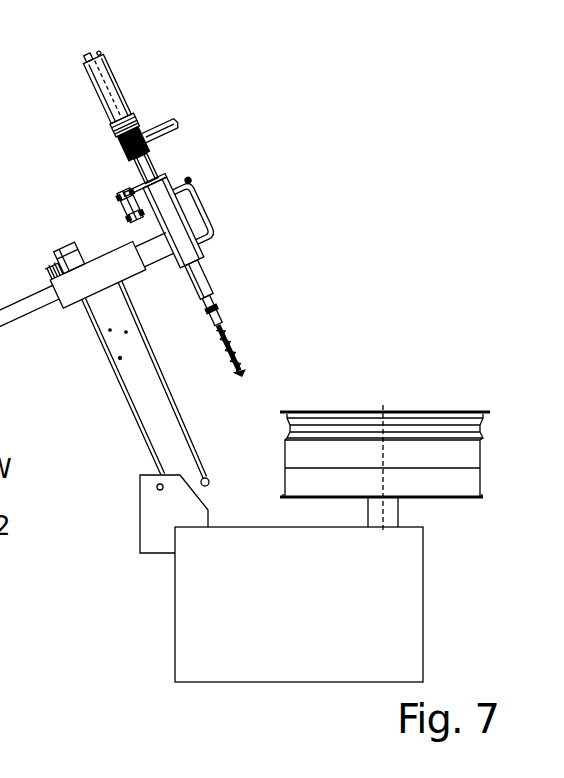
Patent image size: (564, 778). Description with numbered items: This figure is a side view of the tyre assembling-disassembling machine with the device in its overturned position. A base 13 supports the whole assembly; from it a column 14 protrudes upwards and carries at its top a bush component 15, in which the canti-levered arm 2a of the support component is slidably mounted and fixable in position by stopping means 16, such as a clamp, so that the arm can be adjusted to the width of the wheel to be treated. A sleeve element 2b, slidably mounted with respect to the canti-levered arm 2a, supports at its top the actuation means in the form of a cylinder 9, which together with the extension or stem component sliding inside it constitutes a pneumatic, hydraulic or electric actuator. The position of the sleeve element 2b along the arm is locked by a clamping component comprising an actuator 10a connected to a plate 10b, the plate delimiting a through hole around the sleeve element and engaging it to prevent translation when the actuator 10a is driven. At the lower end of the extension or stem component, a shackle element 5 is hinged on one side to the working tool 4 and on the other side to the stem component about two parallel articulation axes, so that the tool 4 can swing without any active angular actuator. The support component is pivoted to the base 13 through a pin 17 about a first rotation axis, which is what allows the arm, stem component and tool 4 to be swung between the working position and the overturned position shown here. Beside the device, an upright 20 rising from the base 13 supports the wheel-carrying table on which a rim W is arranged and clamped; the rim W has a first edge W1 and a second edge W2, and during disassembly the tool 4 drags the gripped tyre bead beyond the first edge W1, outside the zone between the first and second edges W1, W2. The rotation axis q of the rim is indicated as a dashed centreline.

The cylinder 9 is at (103, 118).
The plate 10b is at (137, 177).
The actuator 10a is at (122, 205).
The stopping means 16 is at (78, 242).
The canti-levered arm 2a is at (160, 233).
The sleeve element 2b is at (197, 270).
The shackle element 5 is at (212, 313).
The working tool 4 is at (235, 347).
The bush component 15 is at (65, 308).
The column 14 is at (113, 377).
The pin 17 is at (157, 487).
The upright 20 is at (367, 513).
The base 13 is at (175, 623).
The rim W is at (417, 412).
The first edge of the rim W1 is at (482, 413).
The second edge of the rim W2 is at (480, 497).
The rotation axis q is at (383, 464).